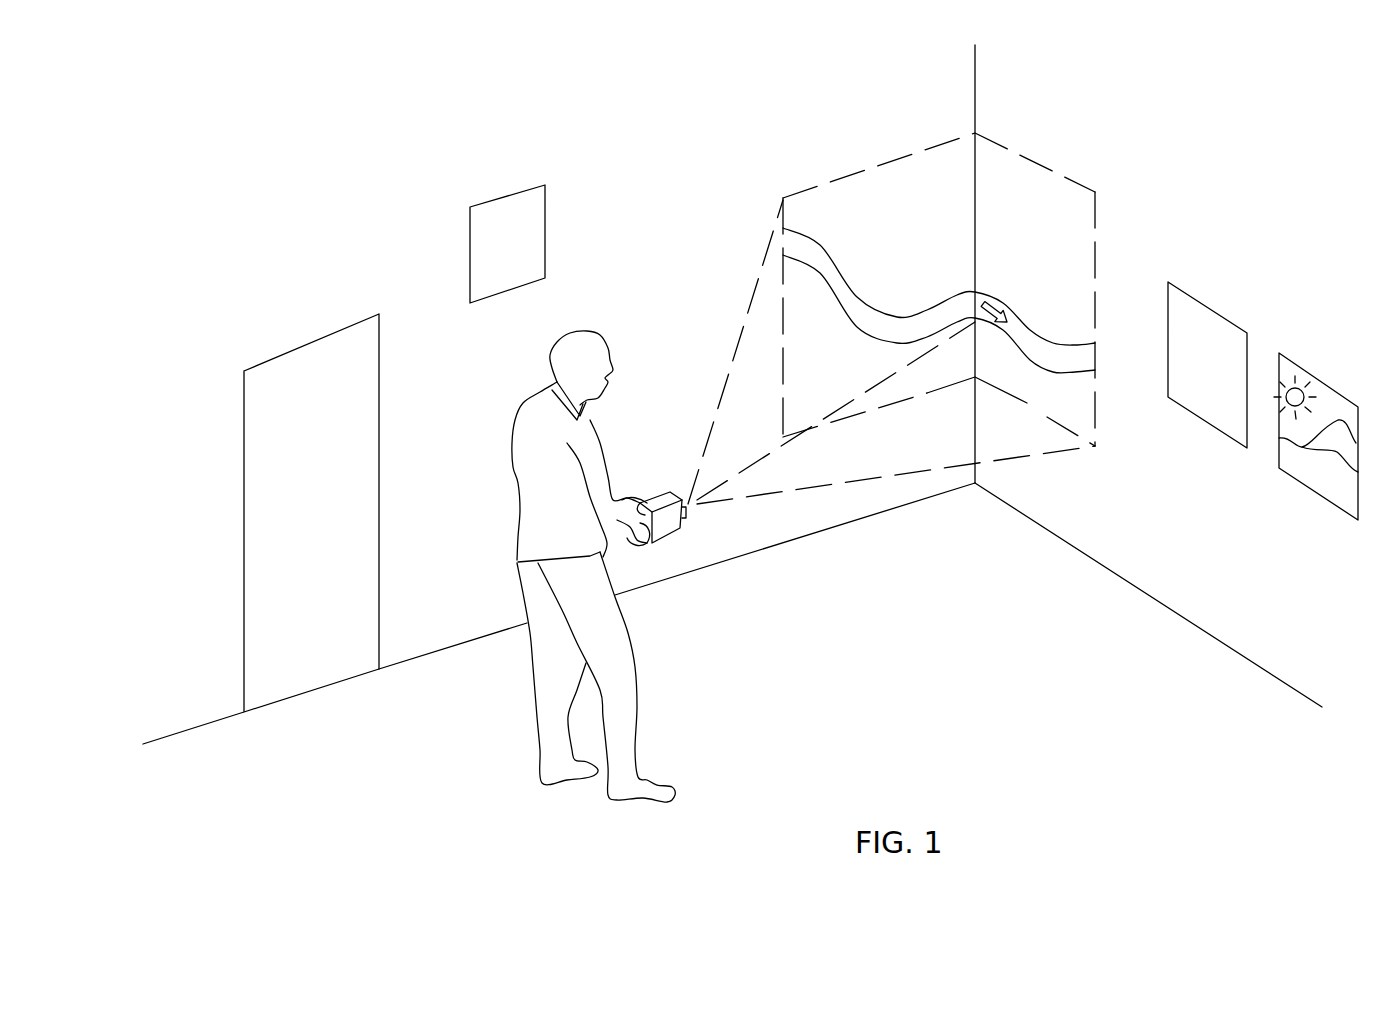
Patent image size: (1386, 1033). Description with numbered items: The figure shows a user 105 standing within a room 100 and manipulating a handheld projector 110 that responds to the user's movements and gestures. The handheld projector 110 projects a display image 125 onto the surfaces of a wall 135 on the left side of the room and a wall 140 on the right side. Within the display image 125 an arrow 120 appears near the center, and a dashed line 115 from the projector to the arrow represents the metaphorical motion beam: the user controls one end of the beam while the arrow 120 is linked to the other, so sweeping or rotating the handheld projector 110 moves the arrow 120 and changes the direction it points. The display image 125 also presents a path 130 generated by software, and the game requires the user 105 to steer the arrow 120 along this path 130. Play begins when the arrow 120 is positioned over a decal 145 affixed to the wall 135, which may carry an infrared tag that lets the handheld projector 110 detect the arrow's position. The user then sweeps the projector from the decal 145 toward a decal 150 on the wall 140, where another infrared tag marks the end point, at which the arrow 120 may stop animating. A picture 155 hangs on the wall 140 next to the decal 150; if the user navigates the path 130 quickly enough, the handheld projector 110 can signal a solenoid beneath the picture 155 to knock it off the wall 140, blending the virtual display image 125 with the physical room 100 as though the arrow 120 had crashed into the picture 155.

The room 100 is at (348, 193).
The user 105 is at (505, 505).
The handheld projector 110 is at (686, 529).
The dashed line 115 is at (865, 393).
The arrow 120 is at (988, 303).
The display image 125 is at (1093, 210).
The path 130 is at (837, 265).
The wall 135 is at (603, 92).
The wall 140 is at (1240, 547).
The decal 145 is at (547, 207).
The decal 150 is at (1210, 308).
The picture 155 is at (1325, 380).